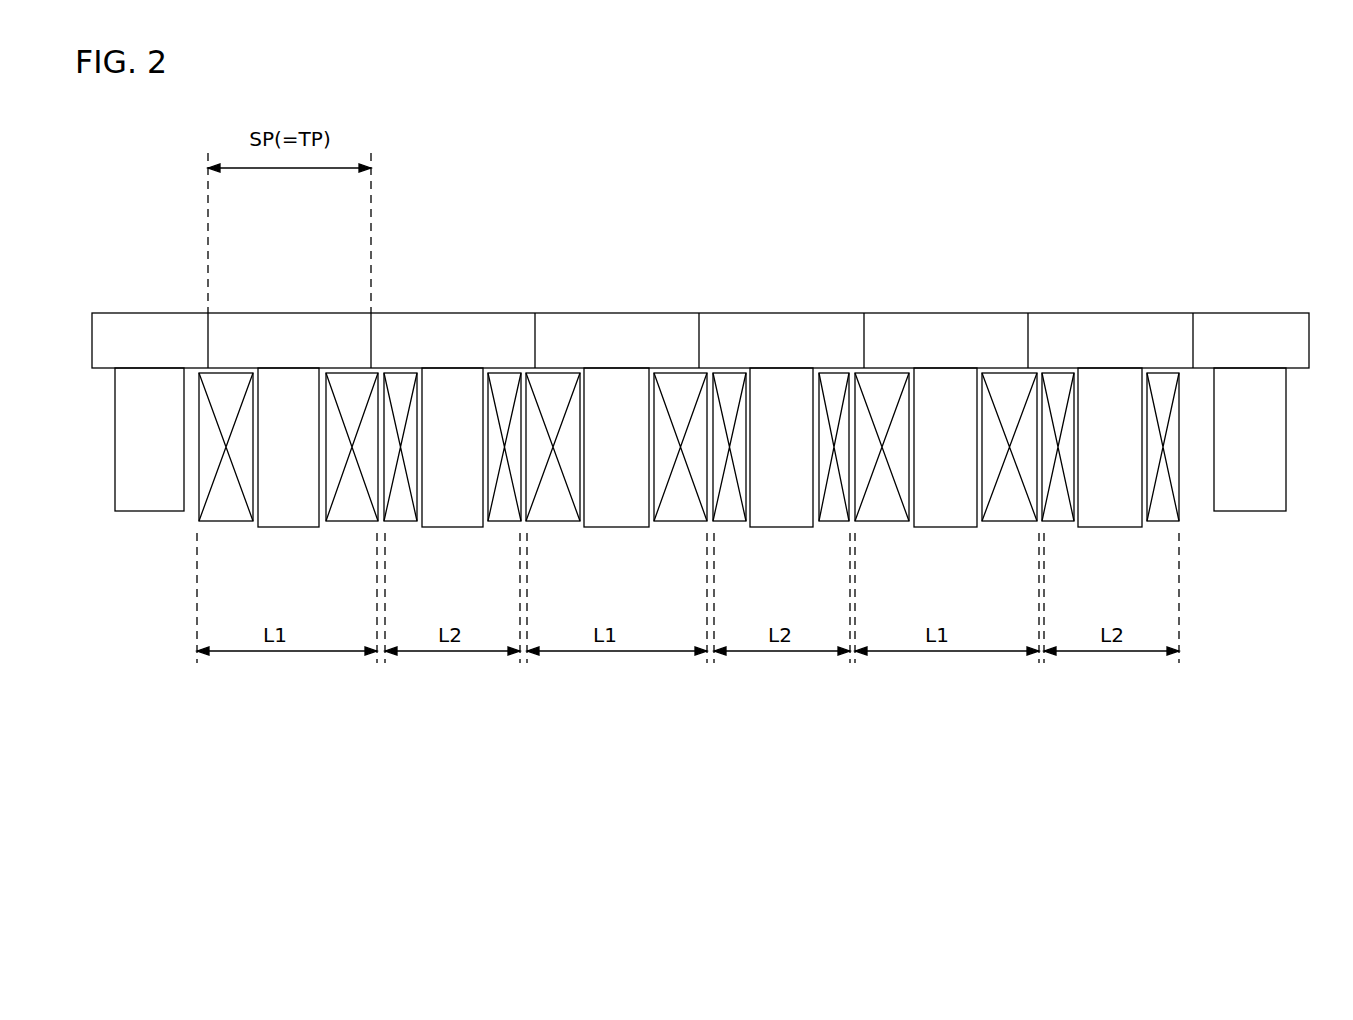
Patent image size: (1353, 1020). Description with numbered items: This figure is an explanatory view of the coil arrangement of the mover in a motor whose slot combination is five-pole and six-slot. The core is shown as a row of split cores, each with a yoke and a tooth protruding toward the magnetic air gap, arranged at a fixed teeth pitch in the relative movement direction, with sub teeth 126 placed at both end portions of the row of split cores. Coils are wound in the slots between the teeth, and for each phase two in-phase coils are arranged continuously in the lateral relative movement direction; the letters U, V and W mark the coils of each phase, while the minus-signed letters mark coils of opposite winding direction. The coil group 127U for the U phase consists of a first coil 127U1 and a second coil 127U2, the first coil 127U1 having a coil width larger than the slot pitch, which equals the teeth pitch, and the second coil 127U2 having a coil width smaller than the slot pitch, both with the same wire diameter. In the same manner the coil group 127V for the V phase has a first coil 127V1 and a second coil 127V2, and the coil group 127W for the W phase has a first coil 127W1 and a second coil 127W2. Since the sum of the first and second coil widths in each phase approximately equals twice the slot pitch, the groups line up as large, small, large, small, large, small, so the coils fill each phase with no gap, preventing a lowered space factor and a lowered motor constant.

The sub teeth 126 is at (141, 340).
The coil group corresponding to the U phase 127U is at (361, 587).
The first coil 127U1 is at (348, 522).
The second coil 127U2 is at (400, 522).
The coil group corresponding to the V phase 127V is at (691, 587).
The first coil 127V1 is at (678, 522).
The second coil 127V2 is at (732, 522).
The coil group corresponding to the W phase 127W is at (1021, 587).
The first coil 127W1 is at (1008, 522).
The second coil 127W2 is at (1062, 522).